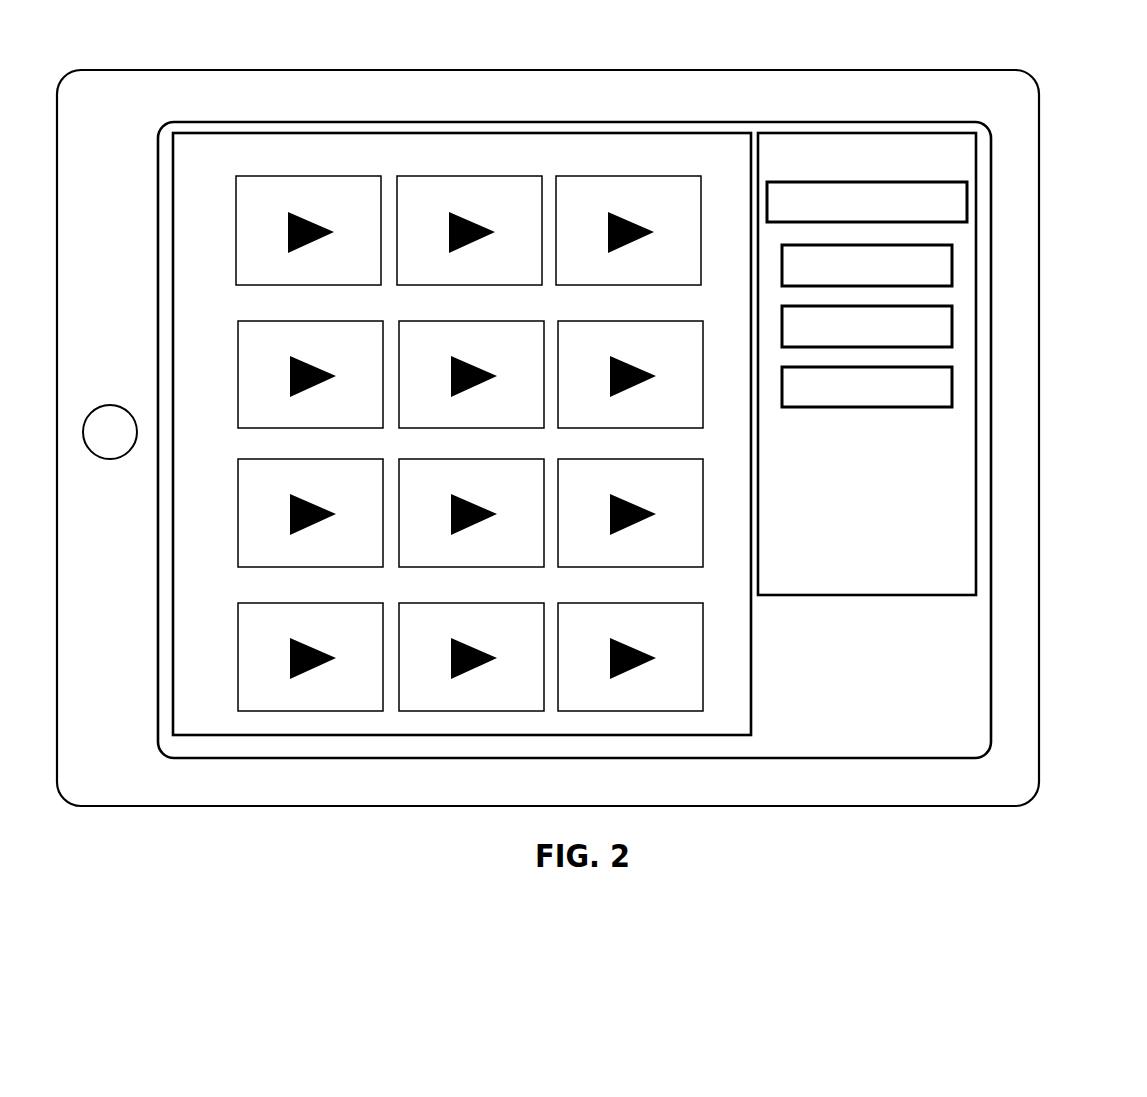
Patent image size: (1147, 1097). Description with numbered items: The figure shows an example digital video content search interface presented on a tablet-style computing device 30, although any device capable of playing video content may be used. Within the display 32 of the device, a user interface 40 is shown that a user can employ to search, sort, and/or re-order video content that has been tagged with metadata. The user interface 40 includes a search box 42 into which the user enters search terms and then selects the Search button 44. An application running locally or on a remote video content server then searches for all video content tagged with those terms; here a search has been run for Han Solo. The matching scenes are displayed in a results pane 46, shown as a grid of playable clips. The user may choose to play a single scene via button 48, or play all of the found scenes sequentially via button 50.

The tablet-style computing device 30 is at (1082, 727).
The display 32 is at (993, 600).
The user interface 40 is at (1008, 118).
The search box 42 is at (968, 200).
The Search button 44 is at (952, 274).
The results pane 46 is at (173, 245).
The button 48 is at (952, 339).
The button 50 is at (952, 388).